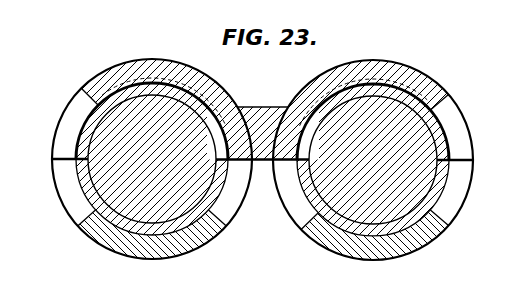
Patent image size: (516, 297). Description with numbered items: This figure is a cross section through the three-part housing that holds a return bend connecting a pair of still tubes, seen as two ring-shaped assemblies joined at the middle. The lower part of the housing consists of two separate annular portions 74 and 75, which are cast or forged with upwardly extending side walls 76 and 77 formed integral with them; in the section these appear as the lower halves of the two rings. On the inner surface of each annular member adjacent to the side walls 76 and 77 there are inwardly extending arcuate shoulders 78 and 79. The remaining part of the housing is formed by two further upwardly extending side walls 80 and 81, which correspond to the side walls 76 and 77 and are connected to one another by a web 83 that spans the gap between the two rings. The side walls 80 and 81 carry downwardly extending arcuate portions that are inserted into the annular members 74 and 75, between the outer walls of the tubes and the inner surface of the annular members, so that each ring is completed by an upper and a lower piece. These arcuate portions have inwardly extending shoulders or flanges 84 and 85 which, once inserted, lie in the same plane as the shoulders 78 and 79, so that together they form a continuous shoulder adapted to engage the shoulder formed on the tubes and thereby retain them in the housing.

The annular portion 74 is at (68, 192).
The annular portion 75 is at (460, 194).
The side wall 76 is at (178, 250).
The side wall 77 is at (410, 254).
The arcuate shoulder 78 is at (135, 228).
The arcuate shoulder 79 is at (362, 230).
The side wall 80 is at (163, 60).
The side wall 81 is at (397, 64).
The web 83 is at (278, 107).
The shoulder or flange 84 is at (168, 97).
The shoulder or flange 85 is at (398, 97).